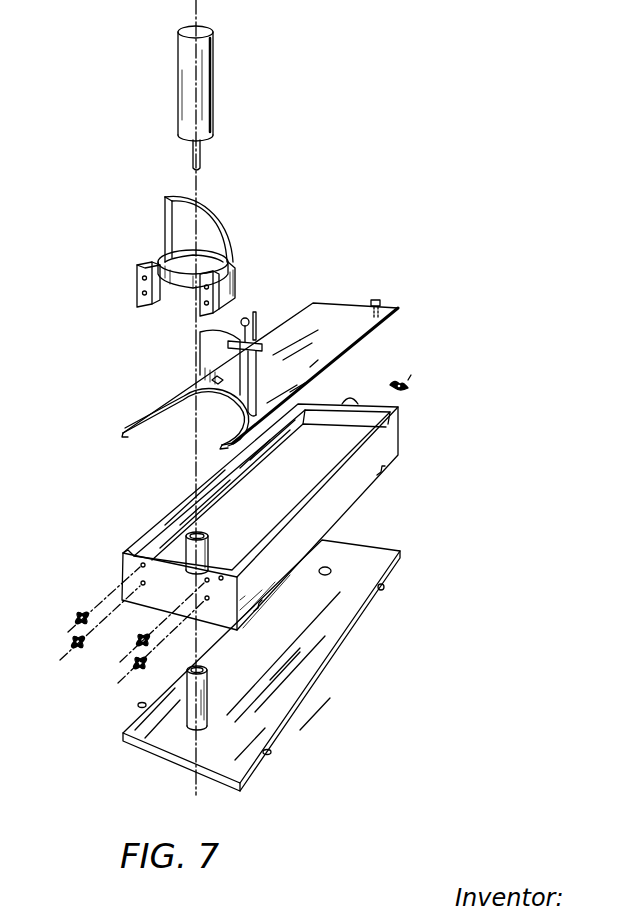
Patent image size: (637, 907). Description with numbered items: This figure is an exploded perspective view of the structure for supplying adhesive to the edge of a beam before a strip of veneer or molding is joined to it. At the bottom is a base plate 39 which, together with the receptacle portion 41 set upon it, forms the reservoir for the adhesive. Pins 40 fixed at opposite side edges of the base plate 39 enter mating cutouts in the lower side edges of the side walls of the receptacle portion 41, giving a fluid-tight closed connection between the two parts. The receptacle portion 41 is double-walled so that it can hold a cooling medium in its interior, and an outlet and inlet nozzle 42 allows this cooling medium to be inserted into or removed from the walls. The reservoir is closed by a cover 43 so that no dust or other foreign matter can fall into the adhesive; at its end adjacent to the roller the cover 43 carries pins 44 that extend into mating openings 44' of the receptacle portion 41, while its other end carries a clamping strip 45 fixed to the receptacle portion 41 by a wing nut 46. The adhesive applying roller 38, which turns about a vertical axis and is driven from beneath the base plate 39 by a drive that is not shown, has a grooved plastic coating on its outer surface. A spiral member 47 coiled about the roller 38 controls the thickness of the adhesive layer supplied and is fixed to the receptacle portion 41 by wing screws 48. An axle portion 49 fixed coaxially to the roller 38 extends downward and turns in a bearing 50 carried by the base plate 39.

The adhesive applying roller 38 is at (215, 72).
The axle portion 49 is at (201, 152).
The spiral member 47 is at (220, 217).
The cover 43 is at (303, 330).
The pins 44 is at (155, 420).
The clamping strip 45 is at (377, 301).
The outlet and inlet nozzle 42 is at (350, 400).
The wing nut 46 is at (406, 389).
The receptacle portion 41 is at (399, 433).
The mating openings 44' is at (107, 553).
The wing screws 48 is at (79, 614).
The base plate 39 is at (377, 557).
The pins 40 is at (384, 587).
The bearing 50 is at (195, 690).